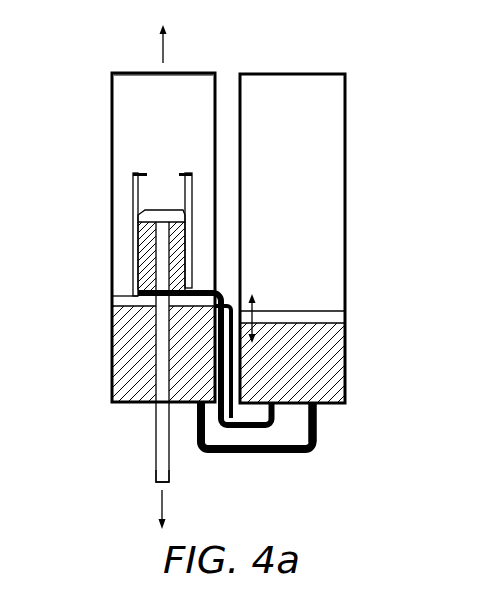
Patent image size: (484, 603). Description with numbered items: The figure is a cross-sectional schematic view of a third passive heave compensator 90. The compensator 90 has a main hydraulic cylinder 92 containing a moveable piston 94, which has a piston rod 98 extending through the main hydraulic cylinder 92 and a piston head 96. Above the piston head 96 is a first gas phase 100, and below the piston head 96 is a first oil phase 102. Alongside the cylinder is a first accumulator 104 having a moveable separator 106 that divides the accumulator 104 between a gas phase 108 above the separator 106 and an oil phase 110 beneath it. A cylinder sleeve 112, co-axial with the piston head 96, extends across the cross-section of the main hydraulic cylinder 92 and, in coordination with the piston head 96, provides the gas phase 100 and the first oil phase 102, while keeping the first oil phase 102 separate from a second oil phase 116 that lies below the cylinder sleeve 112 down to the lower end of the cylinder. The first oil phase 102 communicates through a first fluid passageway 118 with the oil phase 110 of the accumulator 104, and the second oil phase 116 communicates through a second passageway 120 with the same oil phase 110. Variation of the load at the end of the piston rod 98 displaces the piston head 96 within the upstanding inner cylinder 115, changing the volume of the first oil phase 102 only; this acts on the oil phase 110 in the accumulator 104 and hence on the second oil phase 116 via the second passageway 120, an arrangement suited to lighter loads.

The third passive heave compensator 90 is at (112, 64).
The main hydraulic cylinder 92 is at (112, 88).
The moveable piston 94 is at (157, 424).
The piston head 96 is at (165, 210).
The piston rod 98 is at (157, 463).
The first gas phase 100 is at (118, 139).
The first oil phase 102 is at (147, 236).
The first accumulator 104 is at (146, 285).
The moveable separator 106 is at (335, 315).
The gas phase 108 is at (335, 128).
The oil phase 110 is at (337, 365).
The cylinder sleeve 112 is at (121, 300).
The upstanding inner cylinder 115 is at (133, 183).
The second oil phase 116 is at (121, 379).
The first fluid passageway 118 is at (253, 428).
The second passageway 120 is at (318, 432).